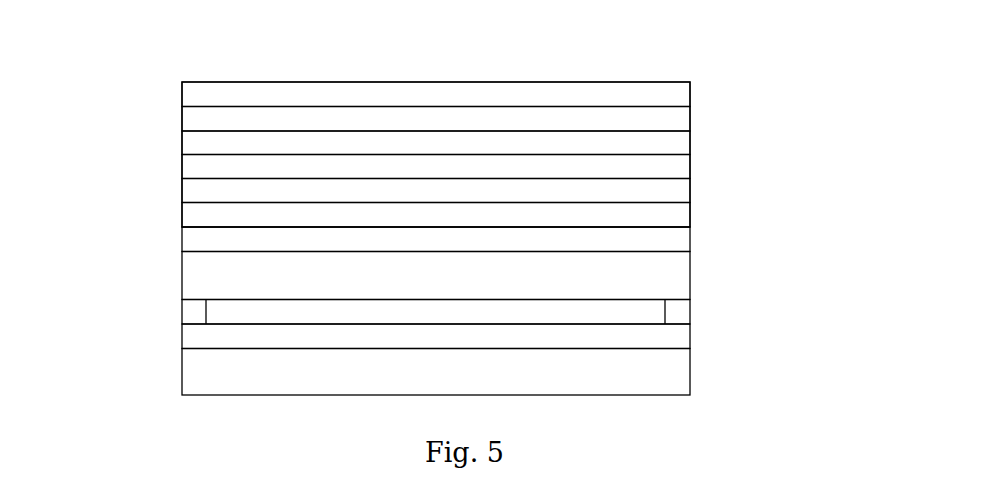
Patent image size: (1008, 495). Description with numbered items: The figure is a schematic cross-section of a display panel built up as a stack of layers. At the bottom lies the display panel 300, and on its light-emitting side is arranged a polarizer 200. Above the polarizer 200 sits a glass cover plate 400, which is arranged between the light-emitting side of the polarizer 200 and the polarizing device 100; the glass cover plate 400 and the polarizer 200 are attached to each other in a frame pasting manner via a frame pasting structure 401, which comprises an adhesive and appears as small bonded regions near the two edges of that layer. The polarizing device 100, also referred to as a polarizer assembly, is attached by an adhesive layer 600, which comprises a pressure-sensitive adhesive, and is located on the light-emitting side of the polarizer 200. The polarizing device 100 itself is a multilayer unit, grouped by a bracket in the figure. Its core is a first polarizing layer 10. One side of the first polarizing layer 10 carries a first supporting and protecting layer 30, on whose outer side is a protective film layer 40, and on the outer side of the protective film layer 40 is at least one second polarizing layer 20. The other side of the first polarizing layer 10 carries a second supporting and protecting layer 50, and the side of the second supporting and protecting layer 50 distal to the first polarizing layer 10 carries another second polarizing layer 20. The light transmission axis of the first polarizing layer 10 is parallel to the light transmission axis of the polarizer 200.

The polarizing device 100 is at (803, 47).
The second polarizing layer 20 is at (690, 95).
The protective film layer 40 is at (690, 118).
The first supporting and protecting layer 30 is at (690, 143).
The first polarizing layer 10 is at (690, 167).
The second supporting and protecting layer 50 is at (690, 192).
The adhesive layer 600 is at (182, 240).
The glass cover plate 400 is at (182, 277).
The frame pasting structure 401 is at (182, 312).
The polarizer 200 is at (690, 337).
The display panel 300 is at (690, 372).